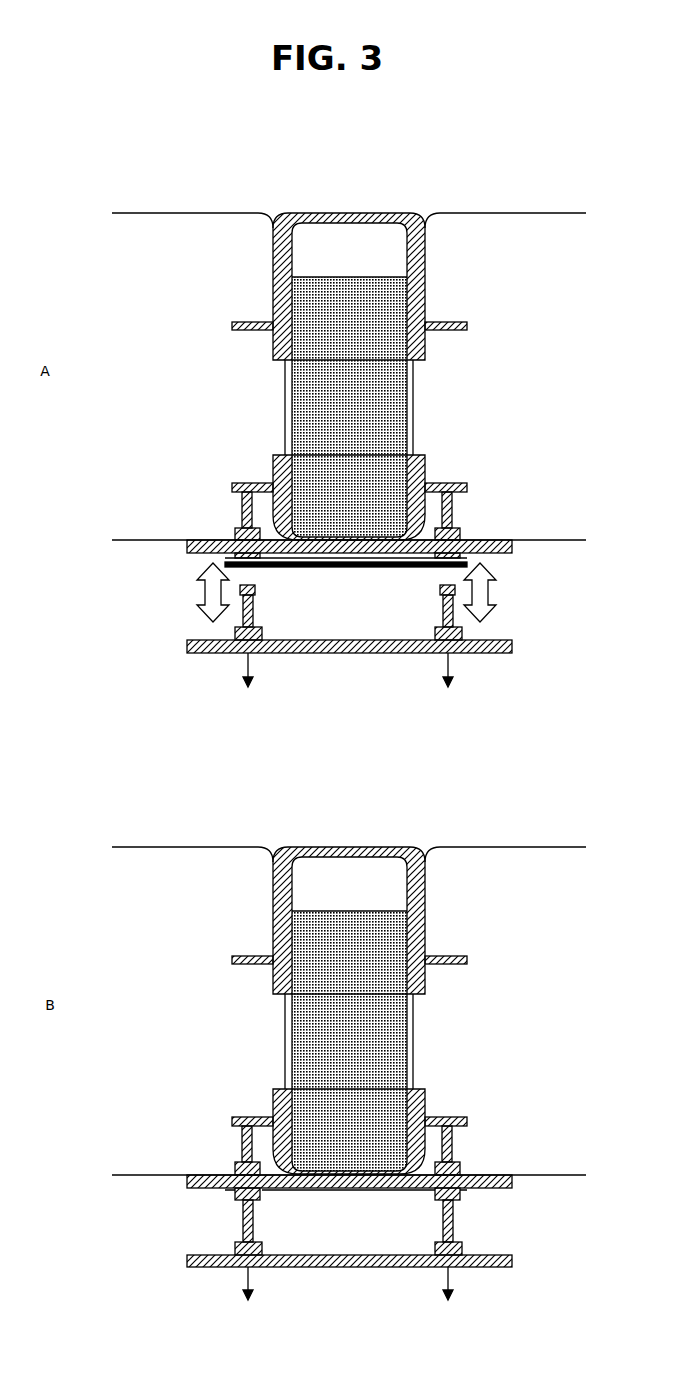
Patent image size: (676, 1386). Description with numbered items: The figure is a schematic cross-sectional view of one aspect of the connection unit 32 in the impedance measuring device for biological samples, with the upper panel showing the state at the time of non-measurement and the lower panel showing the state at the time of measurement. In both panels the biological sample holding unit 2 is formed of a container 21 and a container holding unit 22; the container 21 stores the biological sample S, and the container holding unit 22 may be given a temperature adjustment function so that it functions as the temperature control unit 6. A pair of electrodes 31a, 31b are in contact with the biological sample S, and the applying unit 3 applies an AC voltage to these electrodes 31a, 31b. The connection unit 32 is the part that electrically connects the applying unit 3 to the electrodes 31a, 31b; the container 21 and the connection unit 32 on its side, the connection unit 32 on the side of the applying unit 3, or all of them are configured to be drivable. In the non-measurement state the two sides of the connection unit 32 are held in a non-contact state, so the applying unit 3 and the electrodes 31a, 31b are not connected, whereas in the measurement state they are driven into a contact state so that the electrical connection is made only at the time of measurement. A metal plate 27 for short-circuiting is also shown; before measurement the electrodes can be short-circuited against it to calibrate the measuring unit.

The biological sample holding unit 2 is at (522, 166).
The container 21 is at (346, 232).
The container holding unit 22 is at (200, 232).
The temperature control unit 6 is at (177, 379).
The electrode 31a is at (349, 724).
The electrode 31b is at (384, 724).
The connection unit 32 is at (170, 485).
The metal plate 27 is at (413, 569).
The biological sample S is at (355, 568).
The applying unit 3 is at (348, 988).